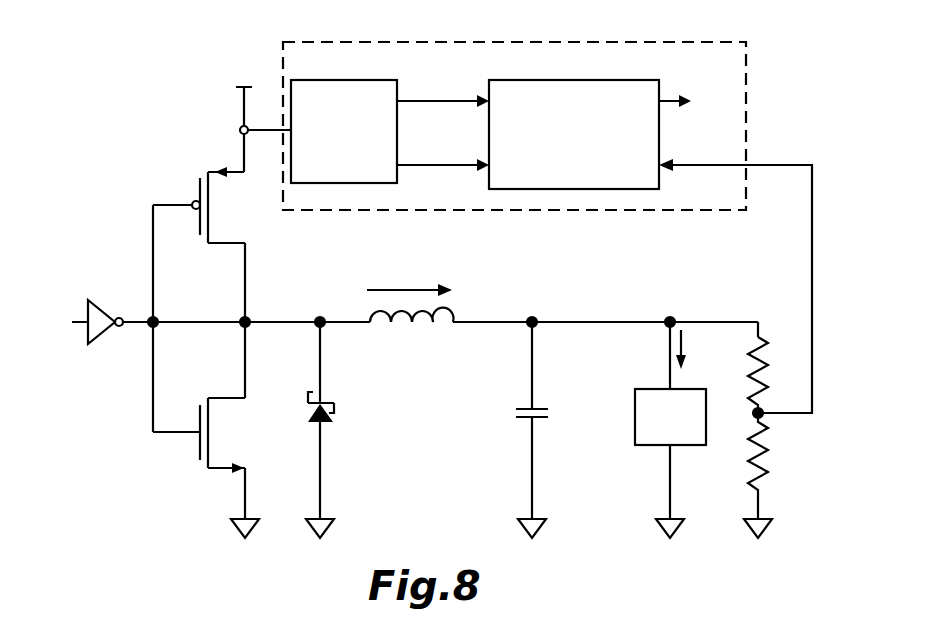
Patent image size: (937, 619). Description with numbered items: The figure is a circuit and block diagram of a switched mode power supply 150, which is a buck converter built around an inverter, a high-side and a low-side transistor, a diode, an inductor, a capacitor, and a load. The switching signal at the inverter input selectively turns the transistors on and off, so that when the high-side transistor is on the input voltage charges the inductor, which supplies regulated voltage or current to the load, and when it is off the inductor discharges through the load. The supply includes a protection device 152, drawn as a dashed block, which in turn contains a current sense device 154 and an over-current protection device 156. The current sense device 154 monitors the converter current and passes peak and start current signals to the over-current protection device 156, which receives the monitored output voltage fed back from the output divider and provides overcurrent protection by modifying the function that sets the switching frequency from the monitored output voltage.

The switched mode power supply 150 is at (149, 104).
The protection device 152 is at (537, 41).
The current sense device 154 is at (322, 80).
The over-current protection device 156 is at (548, 80).